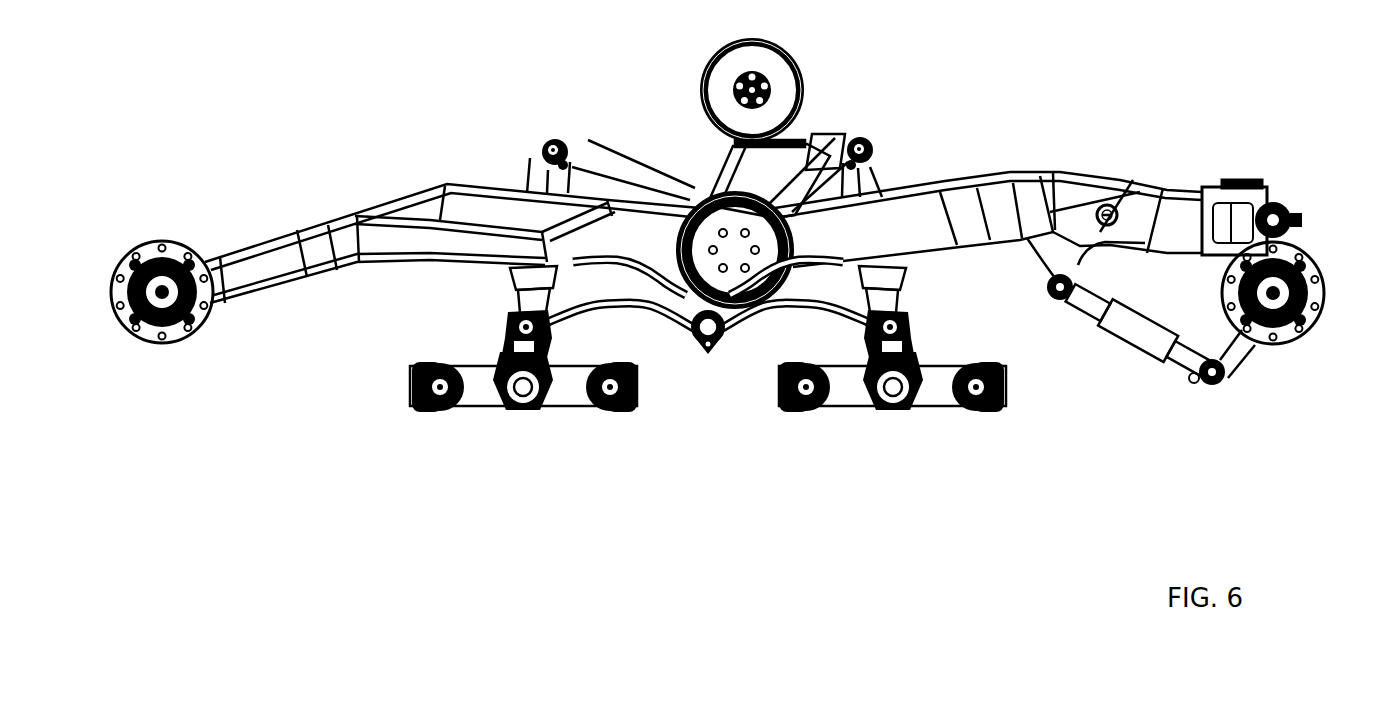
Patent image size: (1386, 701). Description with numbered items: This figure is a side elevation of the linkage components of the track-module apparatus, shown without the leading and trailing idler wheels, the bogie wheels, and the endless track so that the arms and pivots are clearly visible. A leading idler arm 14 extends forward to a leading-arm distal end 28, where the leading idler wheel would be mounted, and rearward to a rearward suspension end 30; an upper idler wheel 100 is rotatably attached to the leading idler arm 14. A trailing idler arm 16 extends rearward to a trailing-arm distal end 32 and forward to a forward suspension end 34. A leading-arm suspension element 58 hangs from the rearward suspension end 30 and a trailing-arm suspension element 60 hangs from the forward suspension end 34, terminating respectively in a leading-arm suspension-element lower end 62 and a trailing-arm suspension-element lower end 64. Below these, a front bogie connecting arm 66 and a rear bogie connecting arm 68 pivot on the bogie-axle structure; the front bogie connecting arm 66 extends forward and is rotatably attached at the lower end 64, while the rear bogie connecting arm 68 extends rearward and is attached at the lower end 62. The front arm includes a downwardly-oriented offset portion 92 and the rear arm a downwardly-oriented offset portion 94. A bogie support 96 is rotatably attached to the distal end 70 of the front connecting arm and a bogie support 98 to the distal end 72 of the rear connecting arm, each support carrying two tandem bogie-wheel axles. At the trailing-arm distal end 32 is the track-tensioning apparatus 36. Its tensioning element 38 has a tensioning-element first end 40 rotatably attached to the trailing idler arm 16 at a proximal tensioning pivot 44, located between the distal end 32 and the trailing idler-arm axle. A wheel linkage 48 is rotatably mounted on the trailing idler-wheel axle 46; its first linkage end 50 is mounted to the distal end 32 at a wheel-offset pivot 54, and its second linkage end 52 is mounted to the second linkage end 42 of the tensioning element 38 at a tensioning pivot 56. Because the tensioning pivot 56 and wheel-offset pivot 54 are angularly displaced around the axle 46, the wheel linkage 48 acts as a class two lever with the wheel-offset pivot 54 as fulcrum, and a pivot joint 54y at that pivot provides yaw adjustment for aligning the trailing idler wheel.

The leading idler arm 14 is at (748, 193).
The trailing idler arm 16 is at (608, 201).
The leading-arm distal end 28 is at (168, 250).
The rearward suspension end 30 is at (870, 138).
The trailing-arm distal end 32 is at (1278, 188).
The forward suspension end 34 is at (548, 140).
The track-tensioning apparatus 36 is at (1032, 383).
The tensioning element 38 is at (1122, 322).
The tensioning-element first end 40 is at (1080, 300).
The second linkage end of tensioning element 42 is at (1198, 403).
The proximal tensioning pivot 44 is at (1060, 302).
The trailing idler-wheel axle 46 is at (1273, 296).
The wheel linkage 48 is at (1228, 330).
The first linkage end 50 is at (1278, 220).
The second linkage end 52 is at (1207, 372).
The wheel-offset pivot 54 is at (1274, 218).
The pivot joint 54y is at (1230, 200).
The tensioning pivot 56 is at (1215, 387).
The leading-arm suspension element 58 is at (875, 173).
The trailing-arm suspension element 60 is at (545, 182).
The leading-arm suspension-element lower end 62 is at (905, 303).
The trailing-arm suspension-element lower end 64 is at (508, 304).
The front bogie connecting arm 66 is at (651, 333).
The rear bogie connecting arm 68 is at (745, 337).
The distal end of front bogie connecting arm 70 is at (523, 400).
The distal end of rear bogie connecting arm 72 is at (893, 400).
The downwardly-oriented offset portion 92 is at (505, 342).
The downwardly-oriented offset portion 94 is at (910, 336).
The bogie support 96 is at (483, 392).
The bogie support 98 is at (940, 395).
The upper idler wheel 100 is at (765, 70).